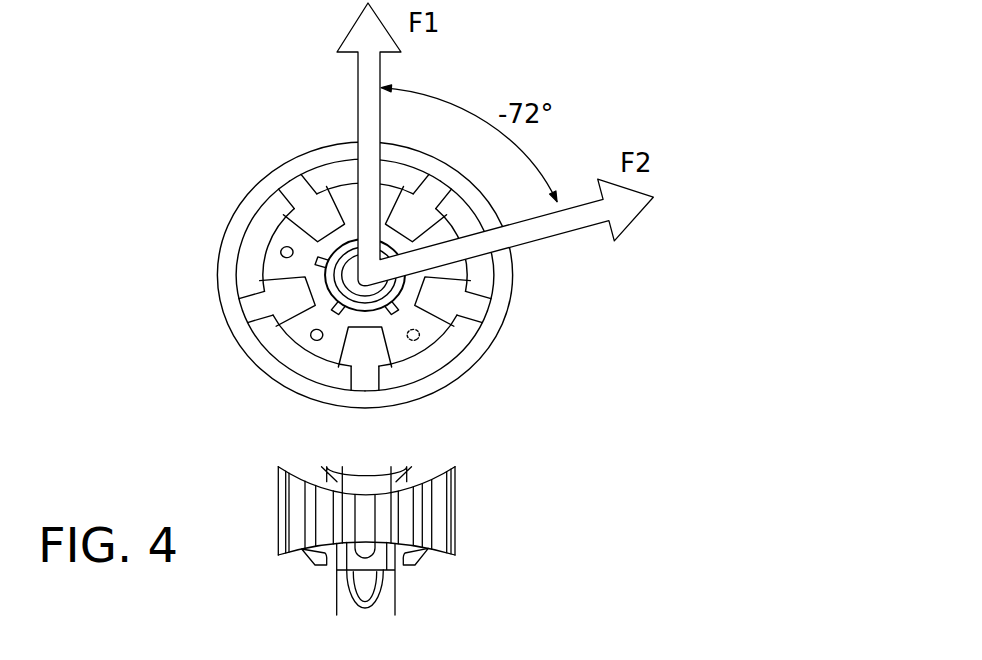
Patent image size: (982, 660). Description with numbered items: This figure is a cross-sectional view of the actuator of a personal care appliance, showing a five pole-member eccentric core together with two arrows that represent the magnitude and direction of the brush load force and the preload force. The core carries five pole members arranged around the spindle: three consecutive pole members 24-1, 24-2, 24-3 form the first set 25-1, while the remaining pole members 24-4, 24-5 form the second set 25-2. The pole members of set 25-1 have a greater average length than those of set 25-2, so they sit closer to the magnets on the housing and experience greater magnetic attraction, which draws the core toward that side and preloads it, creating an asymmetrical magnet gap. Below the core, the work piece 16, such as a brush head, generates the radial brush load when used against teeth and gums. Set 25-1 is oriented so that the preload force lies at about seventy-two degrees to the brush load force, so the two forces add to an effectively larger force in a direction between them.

The pole member 24-1 is at (280, 247).
The pole member 24-2 is at (337, 195).
The pole member 24-3 is at (447, 280).
The pole member 24-4 is at (430, 340).
The pole member 24-5 is at (289, 350).
The set of pole members 25-1 is at (399, 261).
The set of pole members 25-2 is at (232, 307).
The work piece 16 is at (458, 510).